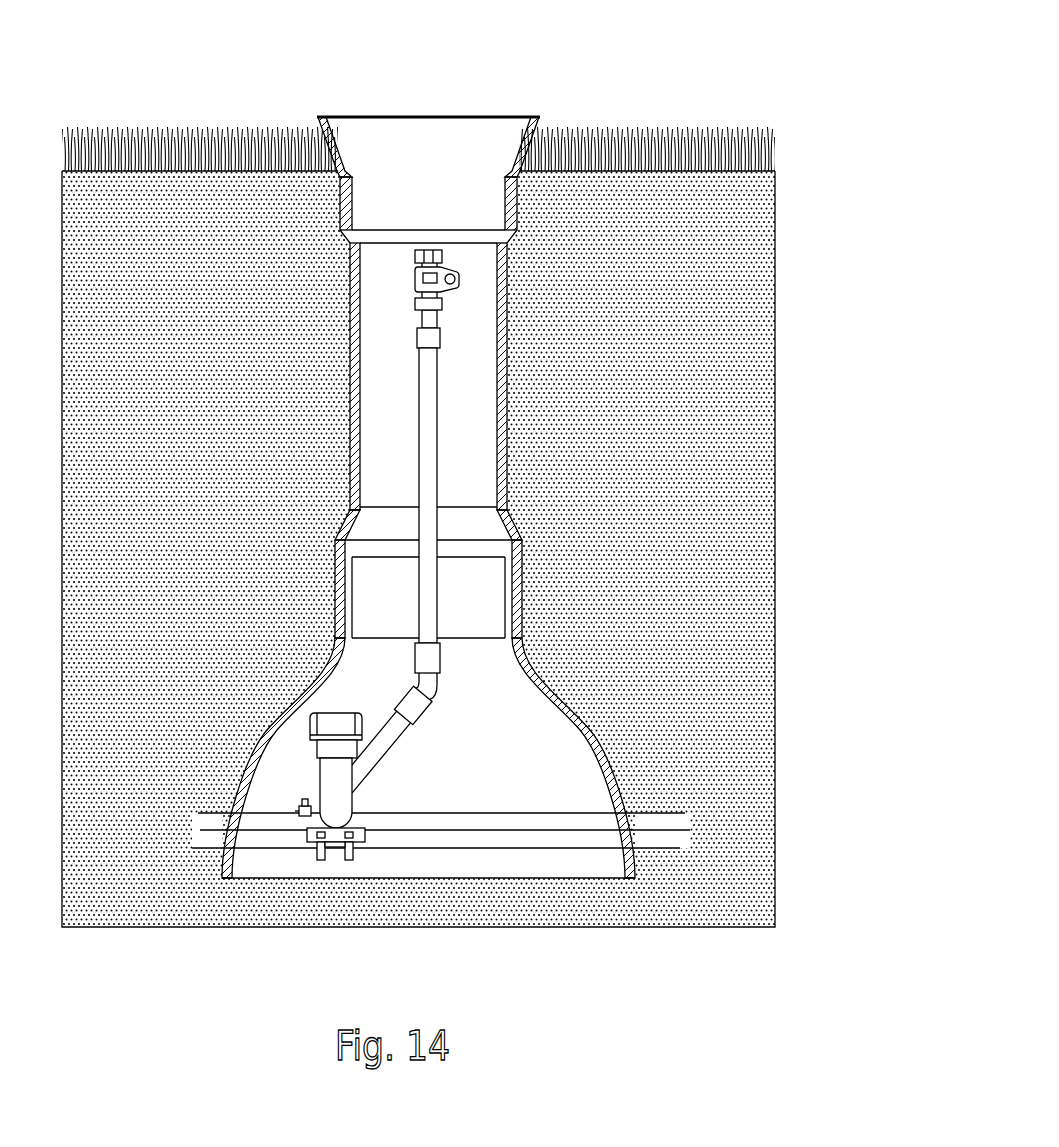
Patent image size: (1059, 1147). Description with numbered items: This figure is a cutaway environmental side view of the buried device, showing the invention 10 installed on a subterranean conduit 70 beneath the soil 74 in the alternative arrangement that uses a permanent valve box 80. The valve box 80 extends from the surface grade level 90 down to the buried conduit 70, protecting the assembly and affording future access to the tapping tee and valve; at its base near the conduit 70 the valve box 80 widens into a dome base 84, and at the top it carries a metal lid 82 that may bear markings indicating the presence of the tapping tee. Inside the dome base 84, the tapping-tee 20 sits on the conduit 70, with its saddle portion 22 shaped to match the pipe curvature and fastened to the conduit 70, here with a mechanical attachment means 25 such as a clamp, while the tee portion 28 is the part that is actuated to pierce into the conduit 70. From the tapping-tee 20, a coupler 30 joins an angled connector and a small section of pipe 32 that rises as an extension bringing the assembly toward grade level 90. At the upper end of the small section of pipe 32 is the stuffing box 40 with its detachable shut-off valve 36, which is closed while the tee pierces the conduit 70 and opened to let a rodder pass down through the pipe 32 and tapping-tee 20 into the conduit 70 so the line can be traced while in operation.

The invention 10 is at (684, 70).
The tapping-tee 20 is at (411, 772).
The saddle portion 22 is at (310, 822).
The mechanical attachment means 25 is at (357, 858).
The tee portion 28 is at (332, 773).
The coupler 30 is at (413, 707).
The small section of pipe 32 is at (427, 450).
The shut-off valve 36 is at (483, 288).
The stuffing box 40 is at (427, 277).
The conduit 70 is at (487, 828).
The soil 74 is at (693, 468).
The valve box 80 is at (505, 382).
The metal lid 82 is at (543, 121).
The dome base 84 is at (622, 787).
The grade level 90 is at (773, 167).